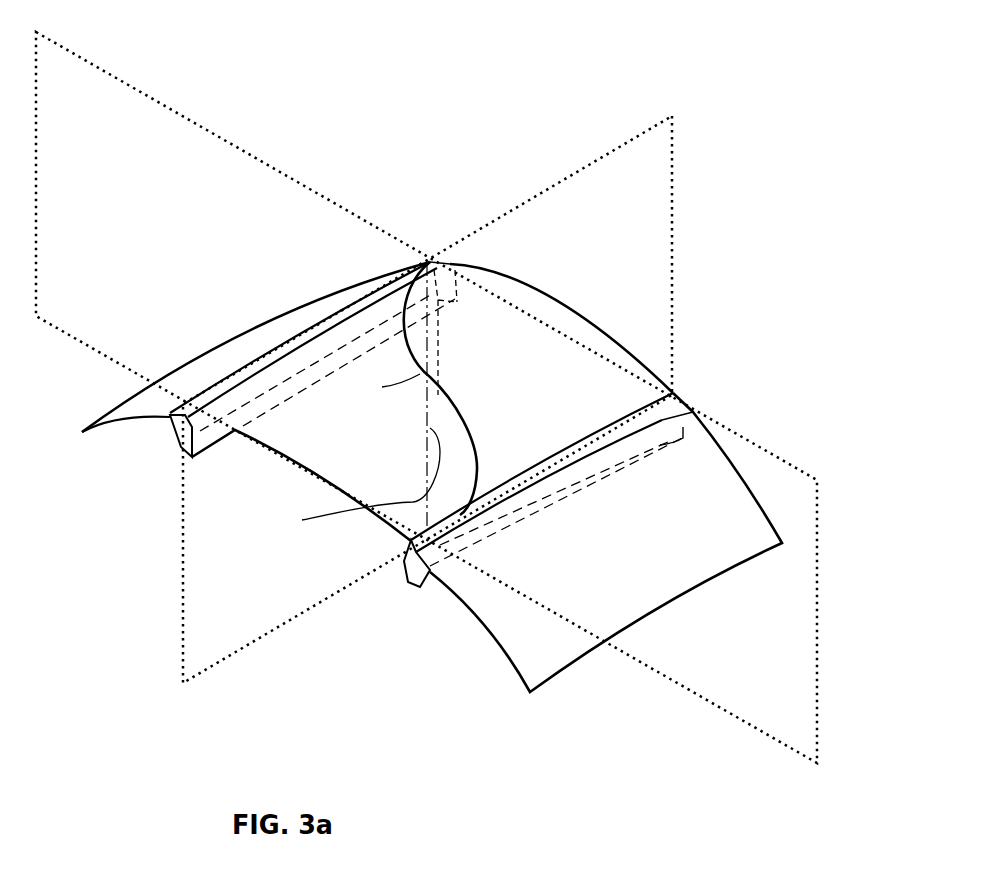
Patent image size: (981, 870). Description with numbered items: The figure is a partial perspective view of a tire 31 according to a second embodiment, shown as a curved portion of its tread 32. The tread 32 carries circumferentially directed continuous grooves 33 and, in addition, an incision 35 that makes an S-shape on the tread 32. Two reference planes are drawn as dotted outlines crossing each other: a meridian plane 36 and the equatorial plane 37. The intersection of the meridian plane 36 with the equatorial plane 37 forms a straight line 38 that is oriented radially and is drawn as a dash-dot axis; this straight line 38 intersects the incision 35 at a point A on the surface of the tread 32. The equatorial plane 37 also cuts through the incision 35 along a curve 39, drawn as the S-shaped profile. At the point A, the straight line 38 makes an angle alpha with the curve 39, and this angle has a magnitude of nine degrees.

The tire 31 is at (430, 397).
The tread 32 is at (597, 333).
The circumferentially directed continuous grooves 33 is at (170, 428).
The incision 35 is at (485, 458).
The meridian plane 36 is at (145, 97).
The equatorial plane 37 is at (572, 175).
The straight line 38 is at (425, 508).
The curve 39 is at (432, 372).